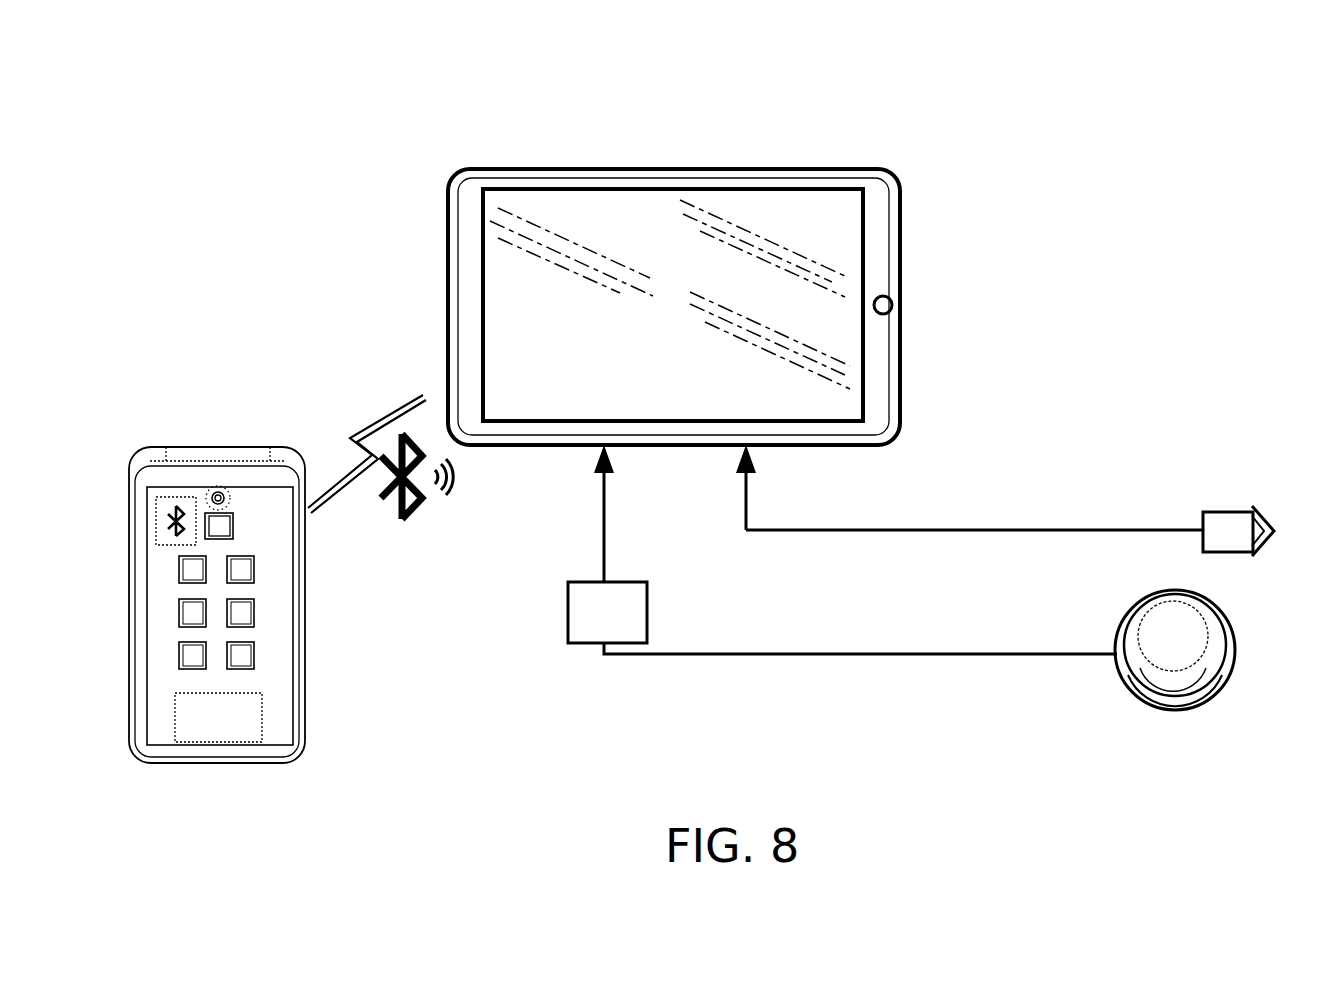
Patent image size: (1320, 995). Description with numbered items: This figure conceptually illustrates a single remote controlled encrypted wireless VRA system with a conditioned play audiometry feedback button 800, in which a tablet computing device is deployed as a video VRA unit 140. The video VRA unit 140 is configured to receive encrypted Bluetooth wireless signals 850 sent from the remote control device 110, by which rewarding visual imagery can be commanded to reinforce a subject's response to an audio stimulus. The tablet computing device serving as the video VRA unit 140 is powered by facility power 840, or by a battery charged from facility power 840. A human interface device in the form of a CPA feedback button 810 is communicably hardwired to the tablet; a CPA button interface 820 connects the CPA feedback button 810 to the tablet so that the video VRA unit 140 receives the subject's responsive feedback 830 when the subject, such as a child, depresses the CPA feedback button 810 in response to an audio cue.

The single remote controlled encrypted wireless VRA system with CPA feedback button 800 is at (196, 119).
The remote control device 110 is at (210, 447).
The video VRA unit 140 is at (899, 220).
The encrypted Bluetooth wireless signals 850 is at (380, 478).
The CPA button interface 820 is at (678, 606).
The responsive feedback 830 is at (852, 656).
The facility power 840 is at (1215, 512).
The CPA feedback button 810 is at (1244, 608).